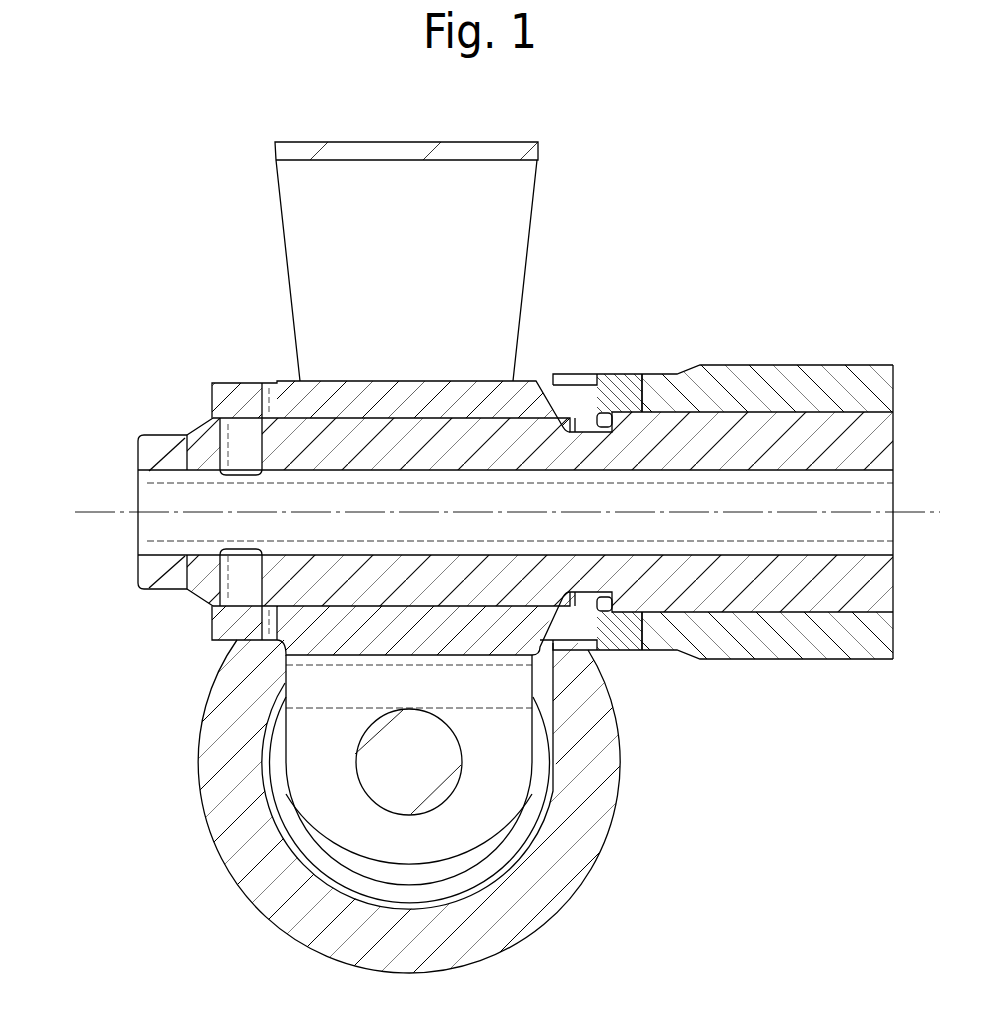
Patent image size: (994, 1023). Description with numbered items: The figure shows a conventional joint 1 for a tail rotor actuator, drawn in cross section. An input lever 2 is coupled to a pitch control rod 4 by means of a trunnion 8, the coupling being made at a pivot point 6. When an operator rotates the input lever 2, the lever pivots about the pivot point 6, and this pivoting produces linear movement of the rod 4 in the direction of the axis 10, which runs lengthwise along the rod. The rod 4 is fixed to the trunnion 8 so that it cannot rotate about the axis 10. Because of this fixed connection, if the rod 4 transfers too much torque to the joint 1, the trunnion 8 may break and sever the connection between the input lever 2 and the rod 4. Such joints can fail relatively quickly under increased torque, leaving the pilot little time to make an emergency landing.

The joint 1 is at (133, 681).
The input lever 2 is at (230, 838).
The pitch control rod 4 is at (158, 445).
The pivot point 6 is at (433, 762).
The trunnion 8 is at (465, 843).
The axis 10 is at (88, 510).